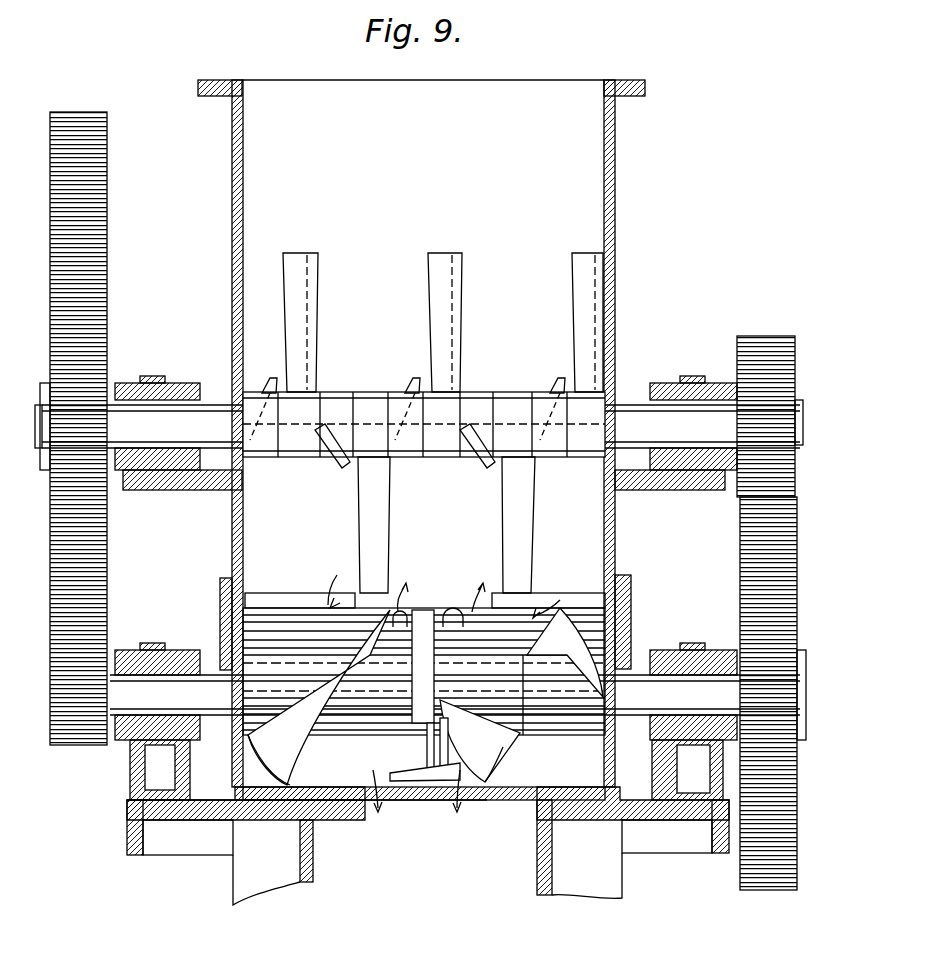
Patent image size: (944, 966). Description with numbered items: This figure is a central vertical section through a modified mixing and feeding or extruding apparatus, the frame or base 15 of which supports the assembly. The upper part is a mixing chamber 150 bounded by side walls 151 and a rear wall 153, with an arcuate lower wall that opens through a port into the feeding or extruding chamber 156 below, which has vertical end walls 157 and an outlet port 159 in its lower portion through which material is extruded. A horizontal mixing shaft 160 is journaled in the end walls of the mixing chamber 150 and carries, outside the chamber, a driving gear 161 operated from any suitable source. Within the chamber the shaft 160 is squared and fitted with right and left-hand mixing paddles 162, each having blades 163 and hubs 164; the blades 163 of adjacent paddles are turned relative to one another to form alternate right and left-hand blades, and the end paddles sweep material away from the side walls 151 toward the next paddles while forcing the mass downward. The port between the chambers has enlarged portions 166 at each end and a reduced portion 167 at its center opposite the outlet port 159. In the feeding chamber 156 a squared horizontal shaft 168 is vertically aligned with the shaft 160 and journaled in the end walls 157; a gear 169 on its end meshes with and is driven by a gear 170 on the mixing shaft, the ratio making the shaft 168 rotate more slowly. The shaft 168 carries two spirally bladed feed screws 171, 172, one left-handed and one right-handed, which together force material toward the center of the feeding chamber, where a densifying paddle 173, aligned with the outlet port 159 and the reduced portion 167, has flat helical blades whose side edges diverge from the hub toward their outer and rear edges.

The frame base 15 is at (128, 835).
The mixing chamber 150 is at (612, 222).
The side walls 151 is at (242, 203).
The rear wall 153 is at (423, 119).
The feeding or extruding chamber 156 is at (535, 768).
The vertical end walls 157 is at (180, 827).
The outlet port 159 is at (440, 795).
The horizontal mixing shaft 160 is at (622, 415).
The driving gear 161 is at (105, 344).
The mixing paddles 162 is at (445, 292).
The blades 163 is at (392, 560).
The hubs 164 is at (446, 440).
The enlarged portions 166 is at (295, 600).
The reduced portion 167 is at (430, 600).
The horizontal shaft 168 is at (636, 672).
The gear 169 is at (757, 857).
The gear 170 is at (767, 352).
The feed screw 171 is at (283, 770).
The feed screw 172 is at (485, 775).
The densifying paddle 173 is at (405, 775).